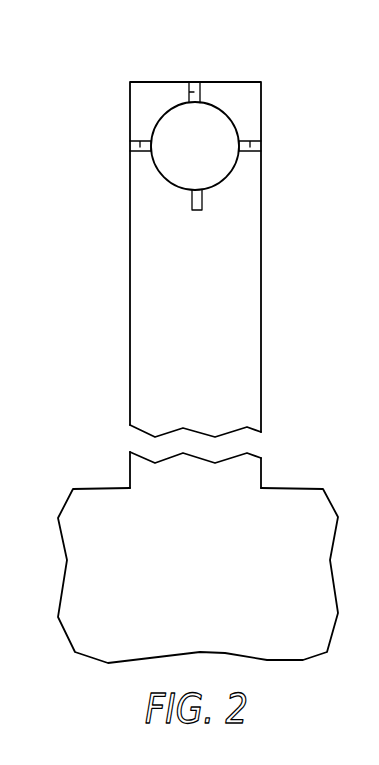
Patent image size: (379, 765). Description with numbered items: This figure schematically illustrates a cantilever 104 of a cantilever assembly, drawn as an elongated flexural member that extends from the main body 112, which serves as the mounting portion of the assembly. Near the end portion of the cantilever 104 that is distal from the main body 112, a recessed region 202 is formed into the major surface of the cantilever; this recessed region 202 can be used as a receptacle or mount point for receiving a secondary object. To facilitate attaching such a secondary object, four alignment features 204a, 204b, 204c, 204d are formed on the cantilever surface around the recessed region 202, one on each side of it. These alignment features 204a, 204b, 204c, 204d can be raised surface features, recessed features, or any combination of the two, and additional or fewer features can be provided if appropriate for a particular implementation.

The cantilever member 104 is at (219, 303).
The main body 112 is at (220, 573).
The recessed region 202 is at (185, 133).
The alignment feature 204a is at (137, 140).
The alignment feature 204b is at (185, 200).
The alignment feature 204c is at (200, 83).
The alignment feature 204d is at (254, 136).